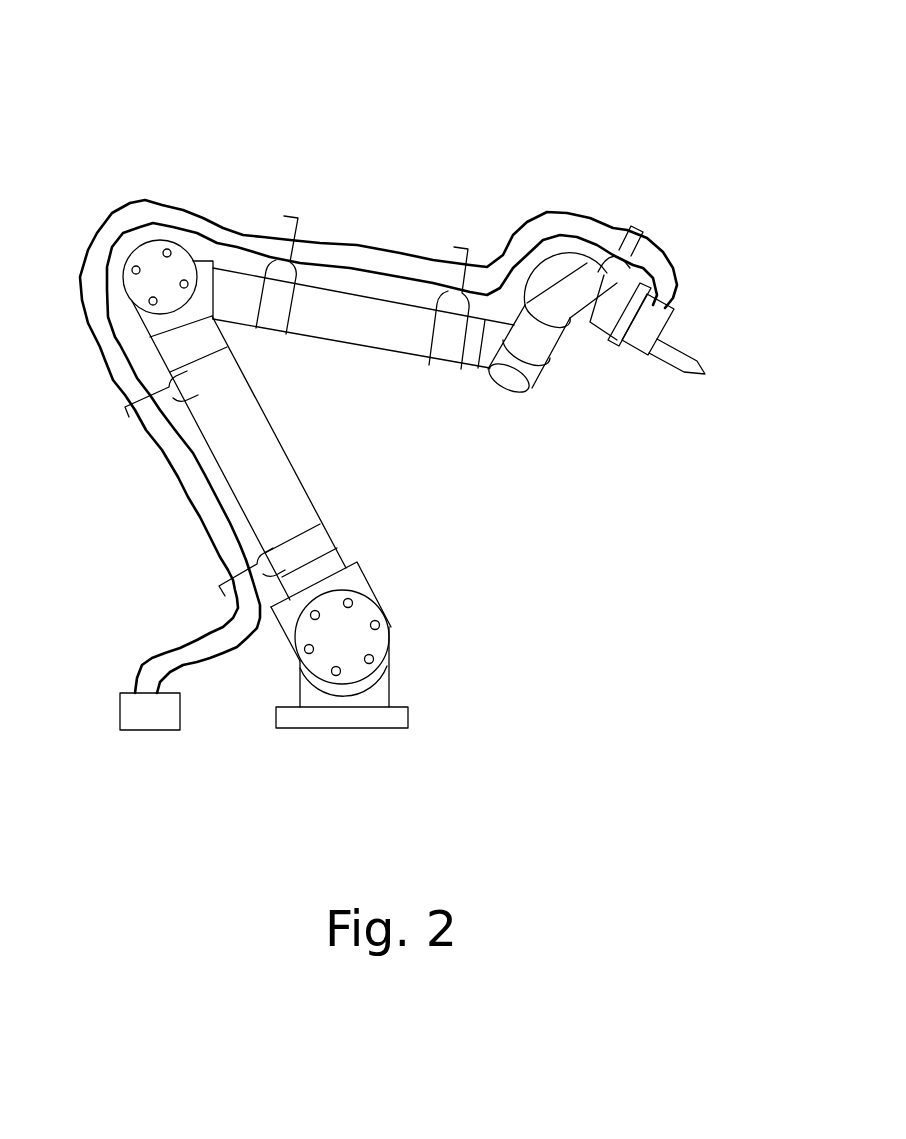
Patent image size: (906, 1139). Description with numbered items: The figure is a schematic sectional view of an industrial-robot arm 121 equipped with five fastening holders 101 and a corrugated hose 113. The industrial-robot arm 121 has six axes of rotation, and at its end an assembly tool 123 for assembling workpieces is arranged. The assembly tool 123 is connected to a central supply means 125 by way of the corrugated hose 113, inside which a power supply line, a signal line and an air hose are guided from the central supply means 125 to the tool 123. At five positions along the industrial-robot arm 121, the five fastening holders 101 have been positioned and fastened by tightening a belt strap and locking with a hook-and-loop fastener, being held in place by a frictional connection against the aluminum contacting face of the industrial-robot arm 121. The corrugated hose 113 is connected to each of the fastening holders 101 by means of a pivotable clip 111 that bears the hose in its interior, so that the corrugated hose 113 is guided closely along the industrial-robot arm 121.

The industrial-robot arm 121 is at (302, 118).
The pivotable clip 111 is at (296, 210).
The corrugated hose 113 is at (188, 495).
The assembly tool 123 is at (667, 332).
The fastening holder 101 is at (403, 447).
The central supply means 125 is at (149, 724).